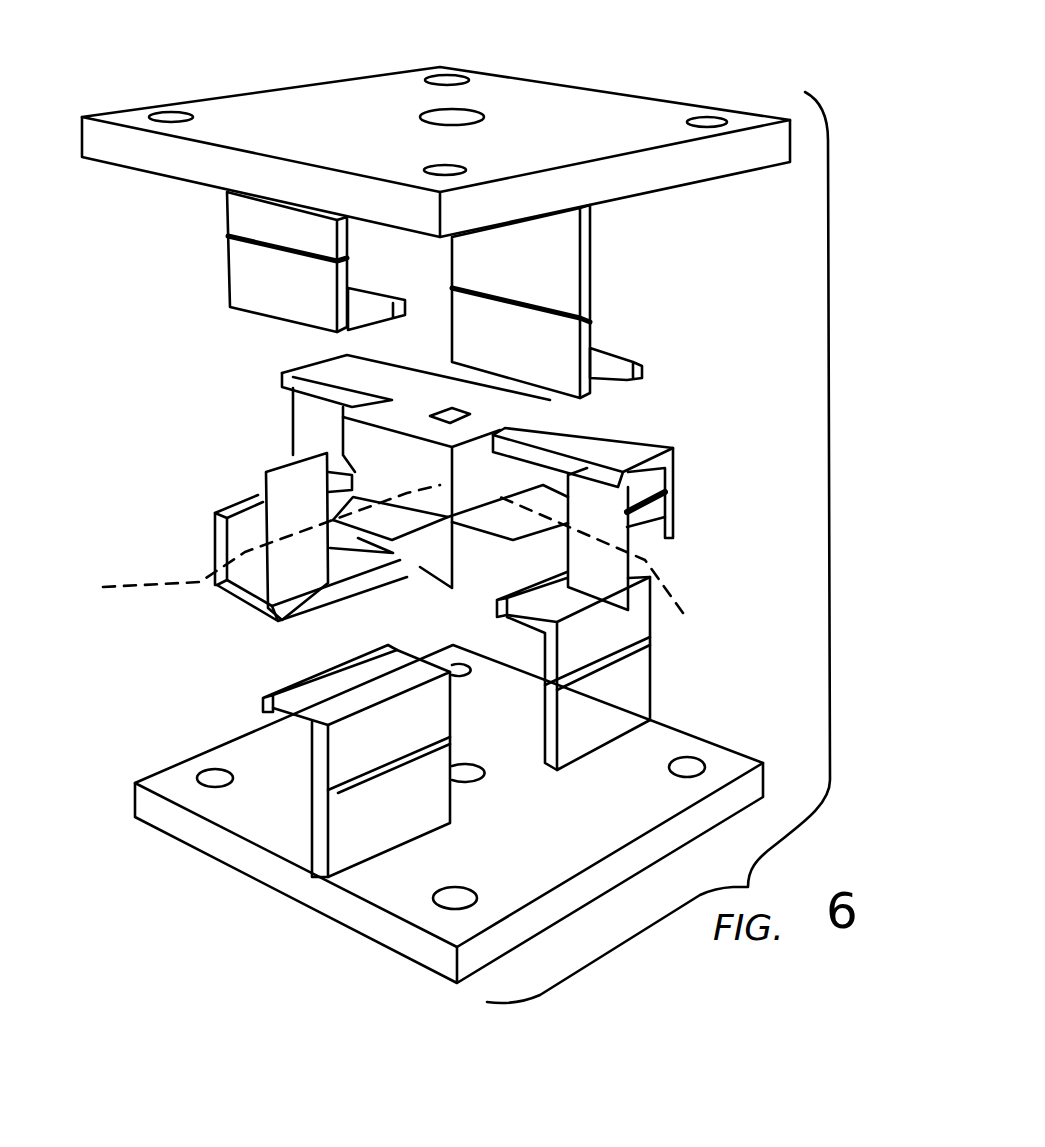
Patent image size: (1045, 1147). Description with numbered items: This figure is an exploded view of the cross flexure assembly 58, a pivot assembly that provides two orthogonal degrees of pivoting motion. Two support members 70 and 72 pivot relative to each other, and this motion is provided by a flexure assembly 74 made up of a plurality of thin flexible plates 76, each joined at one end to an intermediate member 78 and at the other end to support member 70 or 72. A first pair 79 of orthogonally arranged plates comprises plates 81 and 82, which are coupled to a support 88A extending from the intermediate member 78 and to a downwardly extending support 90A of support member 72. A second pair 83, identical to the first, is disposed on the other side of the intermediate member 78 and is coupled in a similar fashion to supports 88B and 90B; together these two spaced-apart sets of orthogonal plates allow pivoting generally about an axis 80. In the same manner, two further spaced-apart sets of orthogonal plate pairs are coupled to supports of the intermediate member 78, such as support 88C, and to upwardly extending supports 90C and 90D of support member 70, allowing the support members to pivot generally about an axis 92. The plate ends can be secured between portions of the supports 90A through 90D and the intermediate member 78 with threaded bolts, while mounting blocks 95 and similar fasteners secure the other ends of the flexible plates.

The pivot assembly 58 is at (116, 438).
The support member 70 is at (763, 780).
The support member 72 is at (640, 92).
The flexure assembly 74 is at (700, 387).
The flexible plates 76 is at (693, 563).
The intermediate member 78 is at (357, 442).
The first pair 79 is at (488, 588).
The axis 80 is at (614, 570).
The plate 81 is at (280, 620).
The plate 82 is at (623, 510).
The second pair 83 is at (270, 392).
The support 88A is at (663, 443).
The support 88B is at (365, 363).
The support 88C is at (215, 557).
The downwardly extending support 90A is at (590, 268).
The support 90B is at (232, 267).
The upwardly extending support 90C is at (323, 777).
The upwardly extending support 90D is at (650, 683).
The axis 92 is at (252, 544).
The mounting blocks 95 is at (380, 296).